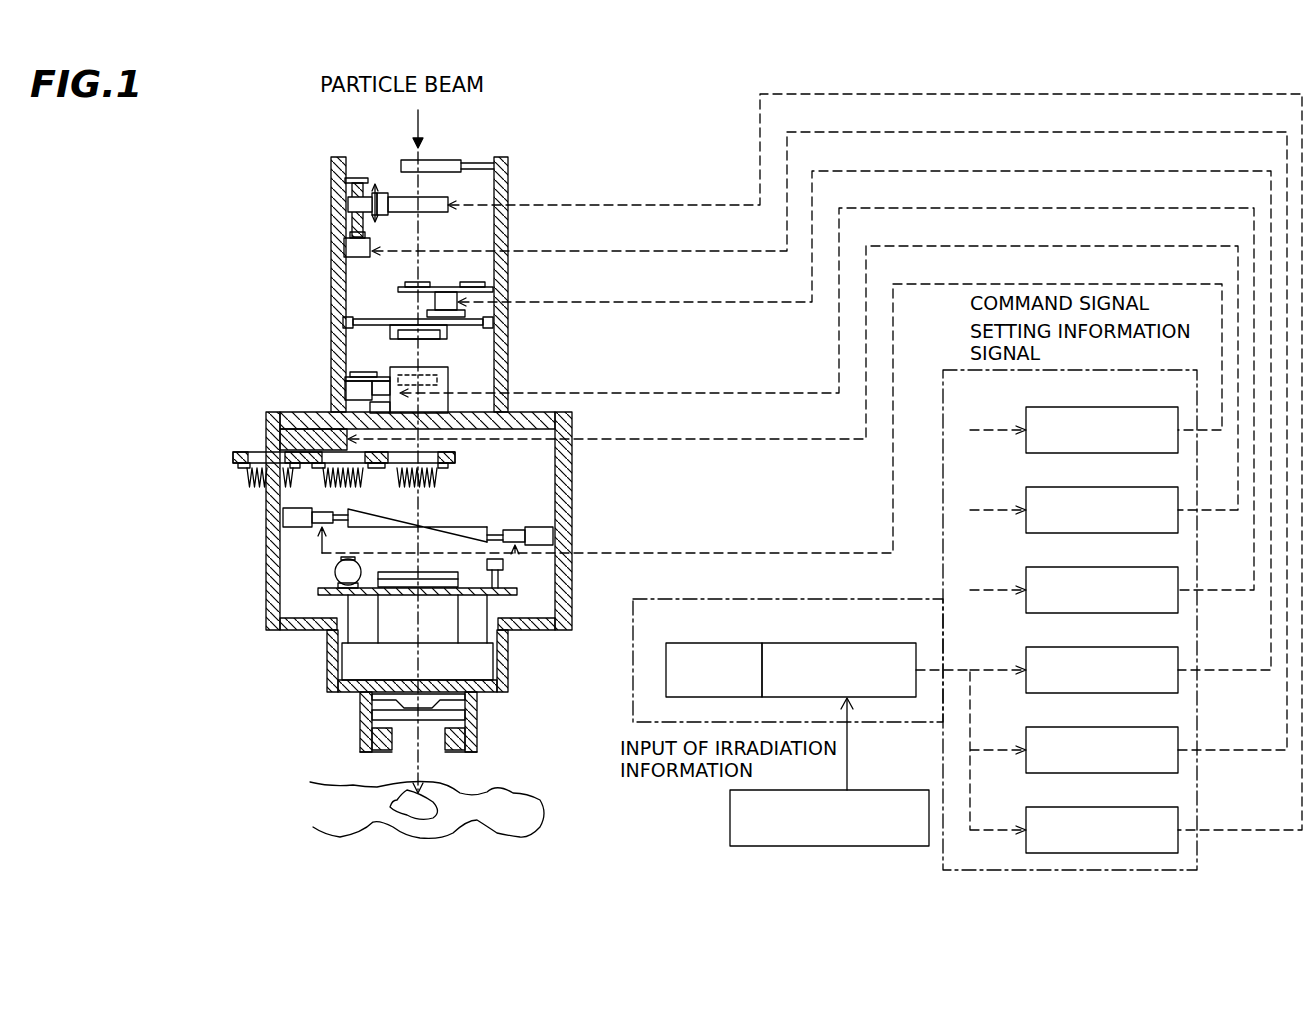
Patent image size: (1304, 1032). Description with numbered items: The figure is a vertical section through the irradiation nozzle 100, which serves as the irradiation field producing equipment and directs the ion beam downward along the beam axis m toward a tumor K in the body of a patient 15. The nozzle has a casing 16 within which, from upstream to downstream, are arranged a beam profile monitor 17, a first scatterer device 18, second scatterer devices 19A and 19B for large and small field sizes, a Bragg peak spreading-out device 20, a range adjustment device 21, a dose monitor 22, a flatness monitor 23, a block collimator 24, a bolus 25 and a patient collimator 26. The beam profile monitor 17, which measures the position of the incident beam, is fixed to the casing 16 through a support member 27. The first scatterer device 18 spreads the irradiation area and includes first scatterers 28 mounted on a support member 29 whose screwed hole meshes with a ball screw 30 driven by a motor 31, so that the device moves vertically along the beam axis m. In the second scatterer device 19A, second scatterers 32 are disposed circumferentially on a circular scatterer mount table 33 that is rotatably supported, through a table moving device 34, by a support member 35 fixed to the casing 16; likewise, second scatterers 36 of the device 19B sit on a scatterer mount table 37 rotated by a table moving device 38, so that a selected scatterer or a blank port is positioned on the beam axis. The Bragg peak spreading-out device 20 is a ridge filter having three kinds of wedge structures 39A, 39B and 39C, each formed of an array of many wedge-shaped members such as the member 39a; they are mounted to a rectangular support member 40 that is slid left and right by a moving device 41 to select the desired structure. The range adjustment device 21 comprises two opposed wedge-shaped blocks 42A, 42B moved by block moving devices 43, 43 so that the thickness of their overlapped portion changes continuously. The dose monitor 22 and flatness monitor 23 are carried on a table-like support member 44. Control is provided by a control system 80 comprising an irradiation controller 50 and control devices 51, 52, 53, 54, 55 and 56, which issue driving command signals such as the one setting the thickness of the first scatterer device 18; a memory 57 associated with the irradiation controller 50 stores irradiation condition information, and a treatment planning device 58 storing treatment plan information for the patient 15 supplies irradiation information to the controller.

The irradiation nozzle 100 is at (276, 158).
The patient 15 is at (538, 812).
The casing 16 is at (509, 383).
The beam profile monitor 17 is at (446, 160).
The first scatterer device 18 is at (452, 195).
The second scatterer device for large field size 19A is at (356, 279).
The second scatterer device for small field size 19B is at (334, 364).
The Bragg peak spreading-out device 20 is at (232, 458).
The range adjustment device 21 is at (411, 515).
The dose monitor 22 is at (455, 576).
The flatness monitor 23 is at (428, 585).
The block collimator 24 is at (360, 664).
The bolus 25 is at (455, 718).
The patient collimator 26 is at (478, 738).
The support member 27 is at (484, 160).
The first scatterer 28 is at (405, 193).
The support member 29 is at (375, 192).
The ball screw 30 is at (347, 210).
The motor 31 is at (346, 245).
The second scatterer 32 is at (413, 283).
The scatterer mount table 33 is at (435, 300).
The table moving device 34 is at (497, 324).
The support member 35 is at (450, 332).
The second scatterer 36 is at (365, 368).
The scatterer mount table 37 is at (348, 380).
The table moving device 38 is at (375, 395).
The wedge structure 39A is at (262, 487).
The wedge structure 39B is at (345, 487).
The wedge structure 39C is at (427, 487).
The ridge filter tooth 39a is at (440, 485).
The support member 40 is at (456, 460).
The moving device 41 is at (265, 435).
The wedge-shaped block 42A is at (363, 521).
The wedge-shaped block 42B is at (490, 527).
The block moving device 43 is at (290, 520).
The table-like support member 44 is at (519, 592).
The irradiation controller 50 is at (853, 643).
The control device 51 is at (1068, 807).
The control device 52 is at (1068, 727).
The control device 53 is at (1068, 647).
The control device 54 is at (1068, 567).
The control device 55 is at (1068, 487).
The control device 56 is at (1068, 407).
The memory 57 is at (697, 643).
The treatment planning device 58 is at (730, 815).
The control system 80 is at (718, 598).
The tumor K is at (400, 795).
The beam axis m is at (413, 356).